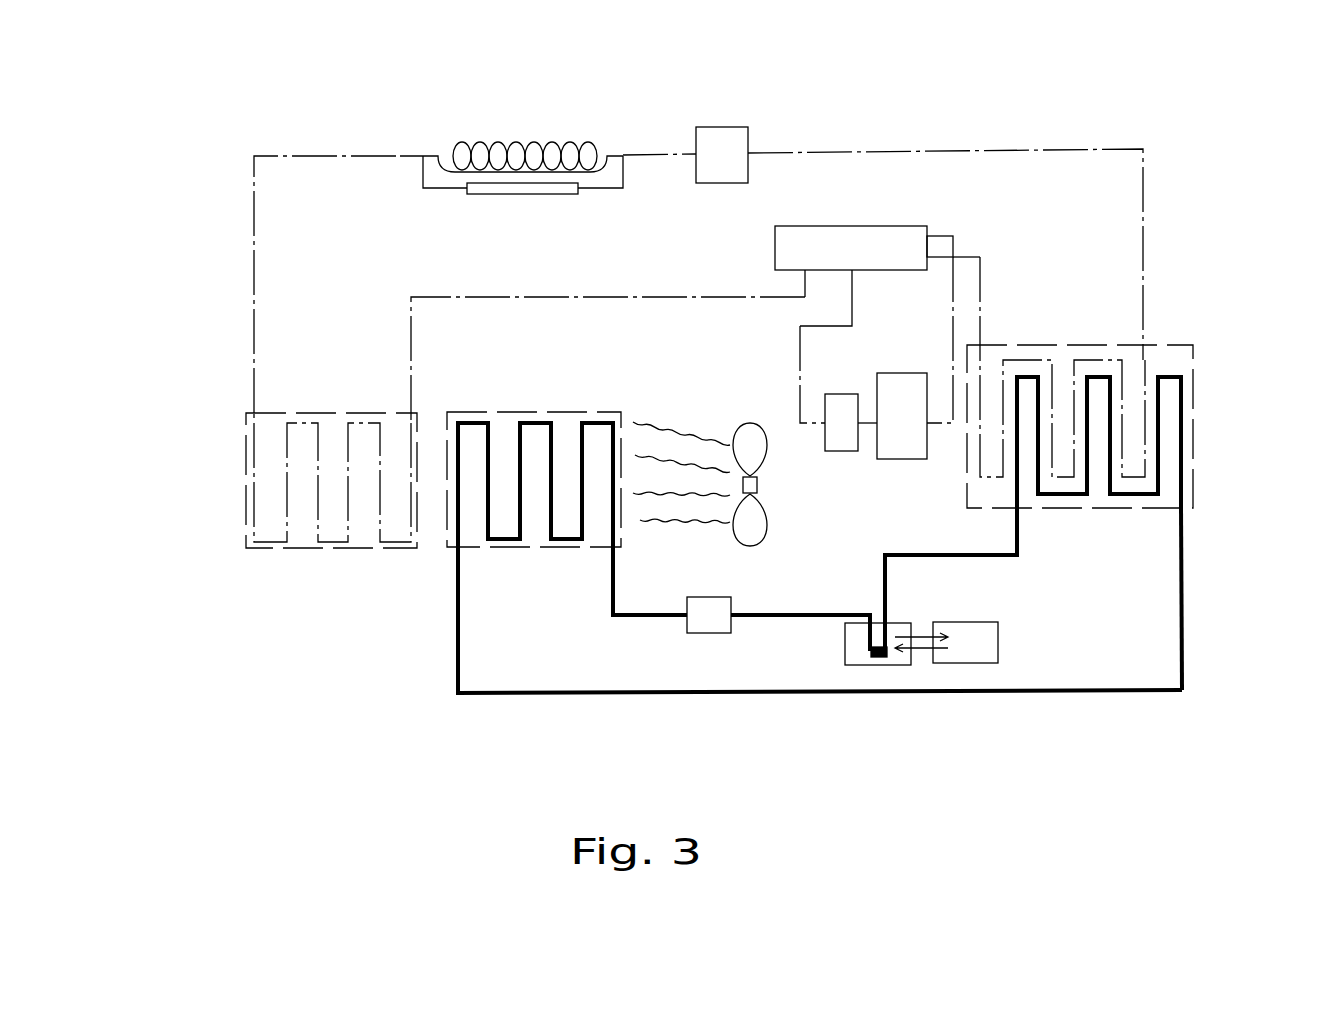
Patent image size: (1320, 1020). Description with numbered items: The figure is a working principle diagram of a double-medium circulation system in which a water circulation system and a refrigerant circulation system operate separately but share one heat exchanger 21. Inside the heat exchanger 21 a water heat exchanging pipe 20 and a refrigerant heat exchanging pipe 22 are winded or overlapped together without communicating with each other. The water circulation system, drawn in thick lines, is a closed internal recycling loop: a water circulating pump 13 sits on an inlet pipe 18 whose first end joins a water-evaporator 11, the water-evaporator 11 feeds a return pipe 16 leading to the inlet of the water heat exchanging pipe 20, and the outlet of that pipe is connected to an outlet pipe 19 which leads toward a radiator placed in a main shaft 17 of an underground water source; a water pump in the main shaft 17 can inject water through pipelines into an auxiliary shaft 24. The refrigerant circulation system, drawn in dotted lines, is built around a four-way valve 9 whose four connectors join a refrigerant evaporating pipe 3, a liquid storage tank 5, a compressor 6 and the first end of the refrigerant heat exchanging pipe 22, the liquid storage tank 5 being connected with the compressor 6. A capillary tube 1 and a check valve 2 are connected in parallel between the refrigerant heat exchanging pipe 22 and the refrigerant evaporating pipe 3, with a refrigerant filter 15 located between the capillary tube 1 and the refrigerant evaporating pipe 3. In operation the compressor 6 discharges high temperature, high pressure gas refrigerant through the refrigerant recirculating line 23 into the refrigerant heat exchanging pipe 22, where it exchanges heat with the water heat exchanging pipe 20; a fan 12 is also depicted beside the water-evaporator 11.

The capillary tube 1 is at (480, 157).
The check valve 2 is at (493, 195).
The refrigerant evaporating pipe 3 is at (247, 462).
The liquid storage tank 5 is at (842, 451).
The compressor 6 is at (903, 459).
The four-way valve 9 is at (808, 247).
The water-evaporator 11 is at (447, 533).
The fan 12 is at (748, 440).
The water circulating pump 13 is at (708, 633).
The refrigerant filter 15 is at (698, 127).
The return pipe 16 is at (557, 695).
The main shaft 17 is at (870, 665).
The inlet pipe 18 is at (827, 615).
The outlet pipe 19 is at (1020, 540).
The water heat exchanging pipe 20 is at (1180, 480).
The heat exchanger 21 is at (1193, 417).
The refrigerant heat exchanging pipe 22 is at (1147, 357).
The refrigerant recirculating line 23 is at (972, 149).
The auxiliary shaft 24 is at (965, 663).